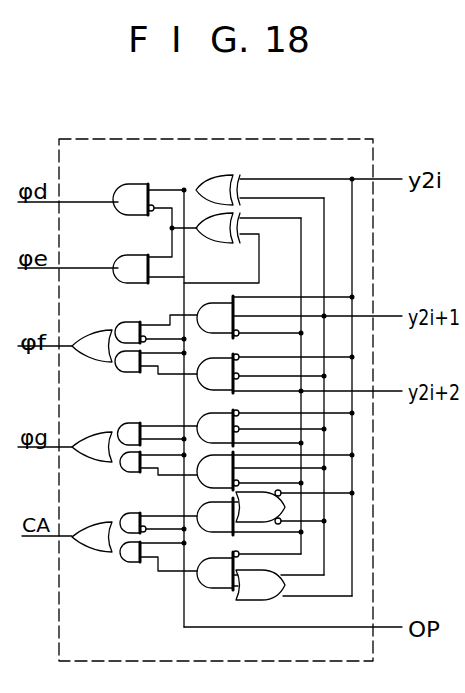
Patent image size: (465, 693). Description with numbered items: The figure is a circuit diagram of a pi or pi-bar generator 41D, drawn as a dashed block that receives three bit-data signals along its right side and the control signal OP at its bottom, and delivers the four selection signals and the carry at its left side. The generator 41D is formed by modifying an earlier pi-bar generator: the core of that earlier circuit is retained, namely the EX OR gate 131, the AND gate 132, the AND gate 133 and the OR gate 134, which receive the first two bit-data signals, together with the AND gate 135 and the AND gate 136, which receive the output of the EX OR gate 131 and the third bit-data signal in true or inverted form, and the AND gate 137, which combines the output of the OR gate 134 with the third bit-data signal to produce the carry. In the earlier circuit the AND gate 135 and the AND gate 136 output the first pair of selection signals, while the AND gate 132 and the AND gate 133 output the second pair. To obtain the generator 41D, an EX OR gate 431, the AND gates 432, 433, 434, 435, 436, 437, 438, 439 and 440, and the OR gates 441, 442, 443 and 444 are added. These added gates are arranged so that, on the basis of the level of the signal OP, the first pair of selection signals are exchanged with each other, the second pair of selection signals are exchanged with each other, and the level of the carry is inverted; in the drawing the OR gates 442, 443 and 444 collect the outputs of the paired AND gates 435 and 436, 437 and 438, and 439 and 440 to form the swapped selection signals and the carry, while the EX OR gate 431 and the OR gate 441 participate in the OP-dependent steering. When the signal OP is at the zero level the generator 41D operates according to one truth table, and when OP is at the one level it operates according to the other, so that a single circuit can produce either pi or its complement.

The pi or pi-bar generator 41D is at (273, 138).
The EX OR gate 131 is at (218, 176).
The EX OR gate 431 is at (215, 244).
The AND gate 135 is at (134, 184).
The AND gate 136 is at (130, 254).
The AND gate 132 is at (242, 296).
The AND gate 133 is at (205, 361).
The AND gate 432 is at (204, 415).
The AND gate 433 is at (197, 488).
The AND gate 137 is at (247, 527).
The OR gate 134 is at (244, 523).
The AND gate 434 is at (202, 589).
The OR gate 441 is at (262, 600).
The OR gate 442 is at (96, 330).
The OR gate 443 is at (97, 432).
The OR gate 444 is at (82, 553).
The AND gate 435 is at (130, 322).
The AND gate 436 is at (126, 373).
The AND gate 437 is at (132, 423).
The AND gate 438 is at (118, 473).
The AND gate 439 is at (135, 513).
The AND gate 440 is at (130, 563).